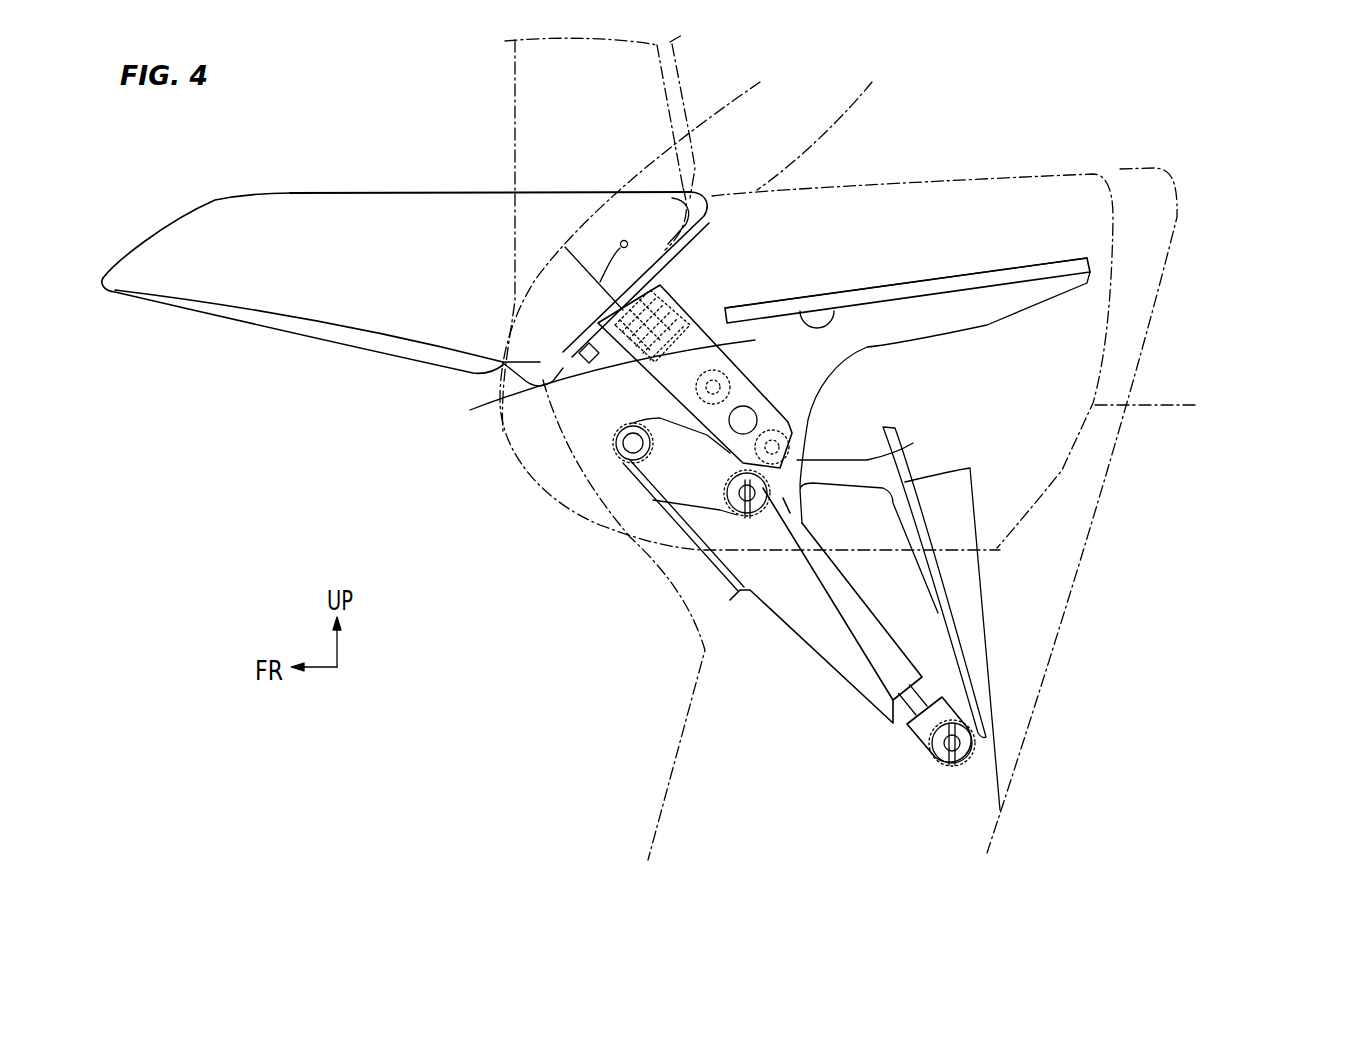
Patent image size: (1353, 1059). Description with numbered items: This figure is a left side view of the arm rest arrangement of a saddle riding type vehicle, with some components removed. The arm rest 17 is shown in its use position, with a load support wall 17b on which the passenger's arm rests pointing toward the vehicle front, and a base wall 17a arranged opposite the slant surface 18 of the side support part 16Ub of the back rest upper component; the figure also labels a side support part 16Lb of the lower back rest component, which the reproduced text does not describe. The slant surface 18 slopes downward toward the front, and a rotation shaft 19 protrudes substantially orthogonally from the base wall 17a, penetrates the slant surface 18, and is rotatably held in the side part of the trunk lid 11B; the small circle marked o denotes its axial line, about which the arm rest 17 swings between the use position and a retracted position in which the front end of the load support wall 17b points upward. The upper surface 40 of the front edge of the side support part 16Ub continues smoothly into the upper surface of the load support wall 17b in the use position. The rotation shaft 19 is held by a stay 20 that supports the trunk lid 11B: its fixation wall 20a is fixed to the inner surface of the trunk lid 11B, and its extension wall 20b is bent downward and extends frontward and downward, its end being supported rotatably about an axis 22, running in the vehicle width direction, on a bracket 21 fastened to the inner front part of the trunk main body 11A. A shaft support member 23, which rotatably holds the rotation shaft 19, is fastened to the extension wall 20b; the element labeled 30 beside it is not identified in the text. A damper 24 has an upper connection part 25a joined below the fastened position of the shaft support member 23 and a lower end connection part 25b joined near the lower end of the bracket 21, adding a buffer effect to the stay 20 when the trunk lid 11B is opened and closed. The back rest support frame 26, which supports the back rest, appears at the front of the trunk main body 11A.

The arm rest 17 is at (297, 196).
The load support wall 17b is at (408, 188).
The base wall 17a is at (537, 392).
The slant surface 18 is at (687, 190).
The rotation shaft 19 is at (680, 300).
The arm 30 is at (720, 327).
The upper surface 40 is at (890, 185).
The stay 20 is at (933, 277).
The fixation wall 20a is at (1042, 272).
The extension wall 20b is at (873, 341).
The trunk lid 11B is at (1225, 290).
The trunk main body 11A is at (1188, 407).
The shaft support member 23 is at (633, 357).
The axis 22 is at (633, 445).
The side support part 16Ub is at (625, 545).
The upper connection part 25a is at (747, 493).
The bracket 21 is at (847, 674).
The damper 24 is at (866, 612).
The lower end connection part 25b is at (948, 745).
The back rest support frame 26 is at (987, 780).
The lower frame rear portion 16Lb is at (660, 800).